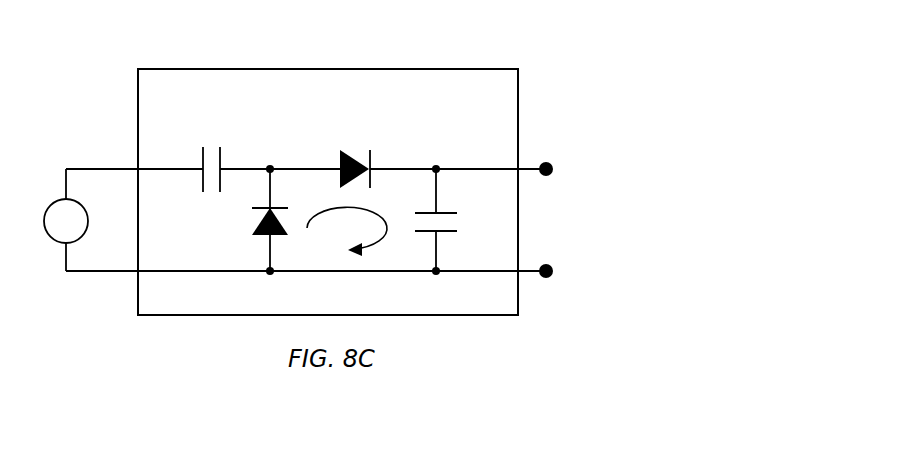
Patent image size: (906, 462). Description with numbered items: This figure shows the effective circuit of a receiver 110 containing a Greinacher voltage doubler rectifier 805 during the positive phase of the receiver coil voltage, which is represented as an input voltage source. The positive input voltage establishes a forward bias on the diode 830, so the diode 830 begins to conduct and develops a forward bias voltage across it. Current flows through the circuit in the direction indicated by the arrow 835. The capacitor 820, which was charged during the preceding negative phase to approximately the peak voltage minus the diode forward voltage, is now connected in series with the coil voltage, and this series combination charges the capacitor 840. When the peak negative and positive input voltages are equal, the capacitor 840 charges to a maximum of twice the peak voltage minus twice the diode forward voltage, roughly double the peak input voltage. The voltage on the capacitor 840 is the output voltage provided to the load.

The Greinacher voltage doubler rectifier 805 is at (560, 73).
The receiver 110 is at (328, 192).
The capacitor 820 is at (203, 183).
The diode 830 is at (340, 160).
The arrow 835 is at (360, 208).
The capacitor 840 is at (425, 233).